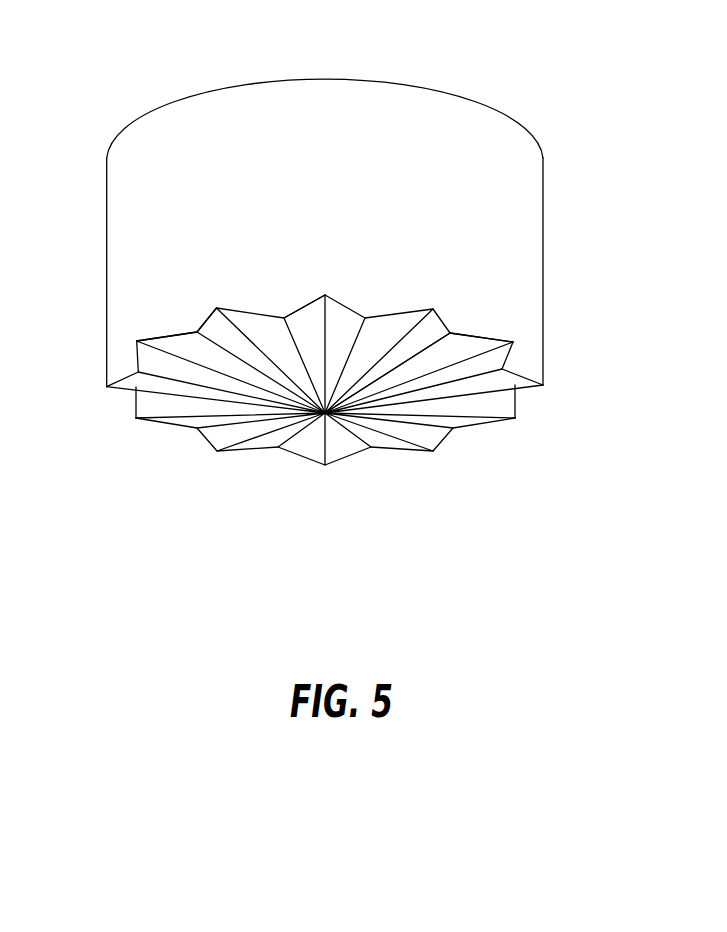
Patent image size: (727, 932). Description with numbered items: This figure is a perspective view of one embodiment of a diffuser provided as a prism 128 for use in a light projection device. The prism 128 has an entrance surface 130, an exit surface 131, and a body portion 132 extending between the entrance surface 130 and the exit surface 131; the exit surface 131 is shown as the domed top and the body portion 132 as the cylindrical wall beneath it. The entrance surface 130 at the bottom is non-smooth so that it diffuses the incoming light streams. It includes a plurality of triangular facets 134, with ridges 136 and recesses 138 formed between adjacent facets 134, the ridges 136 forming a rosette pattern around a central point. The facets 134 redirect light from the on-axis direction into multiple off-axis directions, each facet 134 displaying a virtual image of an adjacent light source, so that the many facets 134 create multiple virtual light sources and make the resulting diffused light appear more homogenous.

The prism 128 is at (122, 108).
The entrance surface 130 is at (483, 405).
The exit surface 131 is at (403, 78).
The body portion 132 is at (511, 175).
The triangular facets 134 is at (312, 340).
The ridges 136 is at (197, 332).
The recesses 138 is at (325, 294).